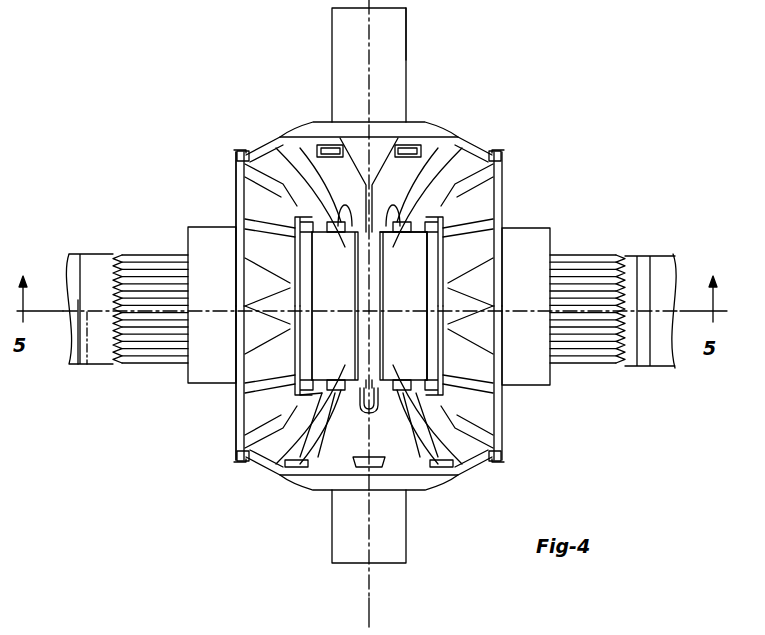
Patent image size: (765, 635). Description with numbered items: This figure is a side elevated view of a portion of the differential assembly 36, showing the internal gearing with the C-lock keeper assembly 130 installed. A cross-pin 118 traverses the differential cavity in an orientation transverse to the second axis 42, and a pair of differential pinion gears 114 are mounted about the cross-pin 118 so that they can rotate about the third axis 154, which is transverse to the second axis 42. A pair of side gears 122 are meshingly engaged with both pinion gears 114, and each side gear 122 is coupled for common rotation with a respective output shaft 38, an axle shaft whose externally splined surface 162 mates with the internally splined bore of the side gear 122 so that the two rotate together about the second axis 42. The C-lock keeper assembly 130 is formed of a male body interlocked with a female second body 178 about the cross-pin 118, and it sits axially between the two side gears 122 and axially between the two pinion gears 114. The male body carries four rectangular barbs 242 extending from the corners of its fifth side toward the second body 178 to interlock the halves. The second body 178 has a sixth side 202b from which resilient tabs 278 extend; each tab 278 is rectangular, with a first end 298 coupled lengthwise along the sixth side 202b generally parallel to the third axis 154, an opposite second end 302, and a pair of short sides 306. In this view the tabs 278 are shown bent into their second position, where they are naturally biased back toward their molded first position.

The differential assembly 36 is at (173, 496).
The output shaft 38 is at (78, 260).
The second axis 42 is at (78, 371).
The differential pinion gear 114 is at (360, 125).
The cross-pin 118 is at (403, 16).
The side gear 122 is at (197, 243).
The C-lock keeper assembly 130 is at (245, 452).
The third axis 154 is at (363, 598).
The externally splined surface 162 is at (128, 362).
The second body 178 is at (304, 392).
The sixth side 202b is at (430, 234).
The barb 242 is at (272, 141).
The tab 278 is at (327, 347).
The first end 298 is at (346, 250).
The second end 302 is at (306, 252).
The side 306 is at (345, 247).